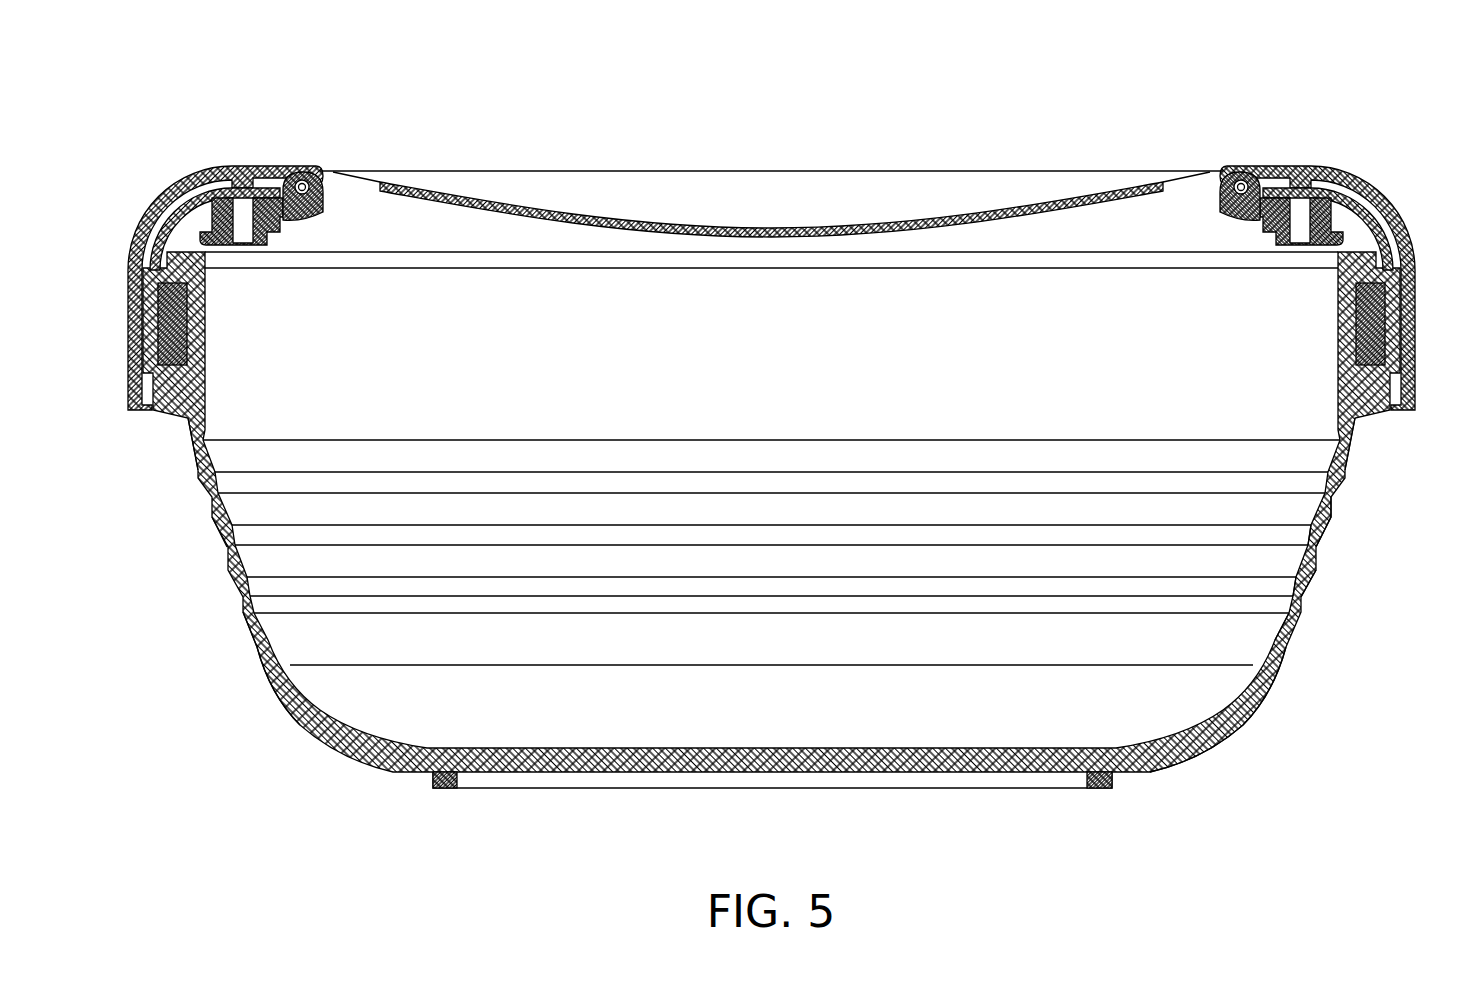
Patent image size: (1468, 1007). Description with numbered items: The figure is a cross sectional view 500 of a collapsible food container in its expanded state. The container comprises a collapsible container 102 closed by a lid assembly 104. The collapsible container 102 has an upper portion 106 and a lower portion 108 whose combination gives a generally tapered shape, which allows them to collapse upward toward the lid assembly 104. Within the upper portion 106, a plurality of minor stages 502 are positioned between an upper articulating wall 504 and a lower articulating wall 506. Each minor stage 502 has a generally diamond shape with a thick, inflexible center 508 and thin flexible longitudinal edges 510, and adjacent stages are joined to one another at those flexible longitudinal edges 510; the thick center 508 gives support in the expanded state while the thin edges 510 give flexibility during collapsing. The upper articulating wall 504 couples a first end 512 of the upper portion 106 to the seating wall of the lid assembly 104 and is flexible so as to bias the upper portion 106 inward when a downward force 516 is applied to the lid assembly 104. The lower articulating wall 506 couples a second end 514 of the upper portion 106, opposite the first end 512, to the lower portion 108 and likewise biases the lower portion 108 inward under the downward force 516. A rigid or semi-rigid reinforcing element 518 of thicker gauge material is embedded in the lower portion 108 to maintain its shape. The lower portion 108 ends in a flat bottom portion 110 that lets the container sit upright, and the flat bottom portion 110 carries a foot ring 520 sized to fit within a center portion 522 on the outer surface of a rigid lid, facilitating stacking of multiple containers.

The cross sectional view 500 is at (1237, 85).
The collapsible container 102 is at (275, 770).
The lid assembly 104 is at (761, 243).
The upper portion 106 is at (227, 562).
The lower portion 108 is at (270, 687).
The flat bottom portion 110 is at (915, 771).
The minor stages 502 is at (1333, 500).
The upper articulating wall 504 is at (1350, 435).
The lower articulating wall 506 is at (1290, 635).
The thick, inflexible center 508 is at (1318, 563).
The thin flexible longitudinal edges 510 is at (1315, 545).
The first end 512 is at (180, 449).
The second end 514 is at (227, 613).
The downward force 516 is at (305, 45).
The reinforcing element 518 is at (1240, 735).
The foot ring 520 is at (1100, 789).
The center portion 522 is at (747, 182).